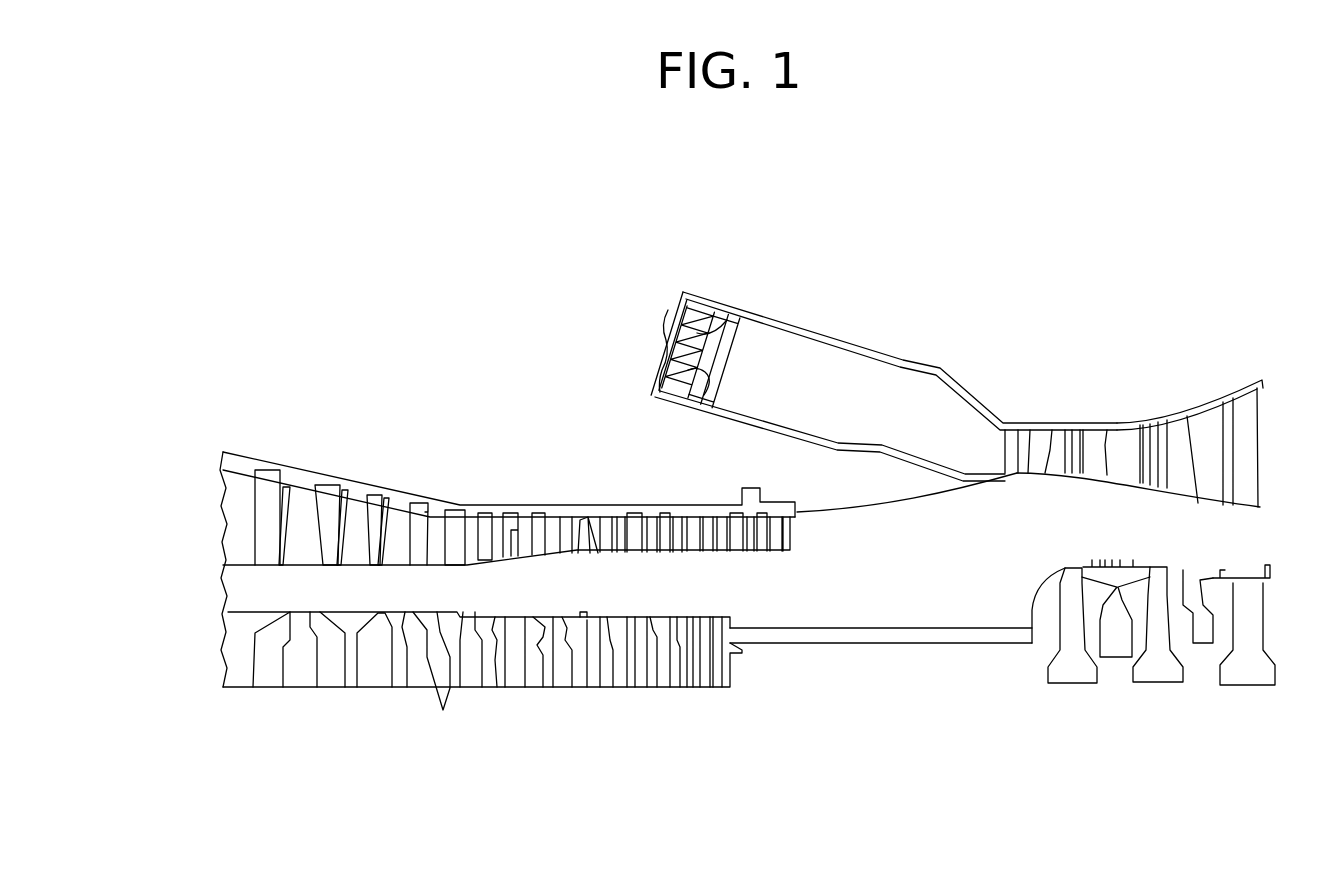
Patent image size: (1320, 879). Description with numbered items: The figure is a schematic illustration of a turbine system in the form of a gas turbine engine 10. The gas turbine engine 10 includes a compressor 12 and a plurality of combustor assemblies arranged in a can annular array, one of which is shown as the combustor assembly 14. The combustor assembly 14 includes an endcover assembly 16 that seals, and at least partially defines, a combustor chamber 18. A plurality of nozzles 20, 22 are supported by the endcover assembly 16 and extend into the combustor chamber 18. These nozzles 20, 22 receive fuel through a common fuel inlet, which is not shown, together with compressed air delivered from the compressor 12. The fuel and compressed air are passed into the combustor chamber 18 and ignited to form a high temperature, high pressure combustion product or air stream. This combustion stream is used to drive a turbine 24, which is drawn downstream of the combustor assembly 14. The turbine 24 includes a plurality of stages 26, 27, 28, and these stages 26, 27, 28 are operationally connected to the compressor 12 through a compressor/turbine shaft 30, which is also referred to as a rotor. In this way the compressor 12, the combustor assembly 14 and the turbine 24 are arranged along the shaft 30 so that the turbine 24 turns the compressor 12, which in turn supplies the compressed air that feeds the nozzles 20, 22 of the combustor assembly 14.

The gas turbine engine 10 is at (194, 306).
The compressor 12 is at (348, 470).
The combustor assembly 14 is at (845, 205).
The endcover assembly 16 is at (530, 337).
The combustor chamber 18 is at (788, 348).
The nozzle 20 is at (704, 395).
The nozzle 22 is at (727, 320).
The turbine 24 is at (1201, 350).
The stage 26 is at (1090, 705).
The stage 27 is at (1173, 703).
The stage 28 is at (1278, 705).
The compressor/turbine shaft 30 is at (818, 633).